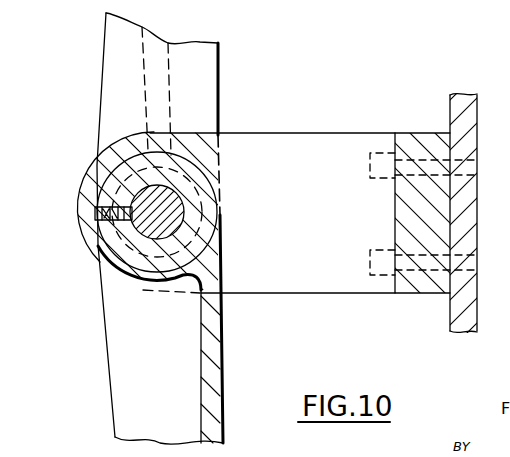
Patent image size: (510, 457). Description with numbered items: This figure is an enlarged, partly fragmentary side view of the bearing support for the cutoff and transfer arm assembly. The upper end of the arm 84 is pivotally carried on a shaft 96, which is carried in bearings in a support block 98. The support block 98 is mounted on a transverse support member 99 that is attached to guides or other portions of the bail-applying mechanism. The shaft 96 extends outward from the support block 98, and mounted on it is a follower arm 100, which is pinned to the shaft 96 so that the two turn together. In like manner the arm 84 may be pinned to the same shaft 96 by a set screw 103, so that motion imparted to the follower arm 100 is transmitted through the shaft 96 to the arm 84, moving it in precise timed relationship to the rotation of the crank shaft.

The follower arm 100 is at (115, 117).
The arm 84 is at (113, 312).
The shaft 96 is at (175, 217).
The set screw 103 is at (95, 213).
The support block 98 is at (300, 265).
The transverse support member 99 is at (462, 315).